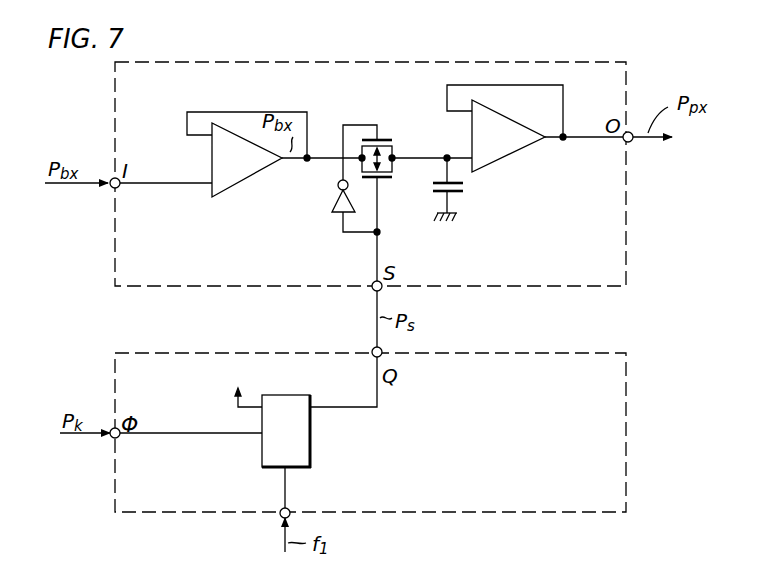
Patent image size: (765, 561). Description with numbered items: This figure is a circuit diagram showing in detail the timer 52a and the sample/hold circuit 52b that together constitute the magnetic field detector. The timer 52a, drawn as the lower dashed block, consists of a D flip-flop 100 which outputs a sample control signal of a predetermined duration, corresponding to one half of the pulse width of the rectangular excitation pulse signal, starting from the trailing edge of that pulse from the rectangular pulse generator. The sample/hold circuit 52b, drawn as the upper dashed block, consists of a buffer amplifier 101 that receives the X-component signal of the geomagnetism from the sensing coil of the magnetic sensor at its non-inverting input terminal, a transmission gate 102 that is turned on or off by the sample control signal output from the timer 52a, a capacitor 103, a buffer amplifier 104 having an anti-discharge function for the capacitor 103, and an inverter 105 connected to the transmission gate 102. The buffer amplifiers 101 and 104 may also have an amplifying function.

The D flip-flop 100 is at (312, 450).
The buffer amplifier 101 is at (250, 177).
The transmission gate 102 is at (389, 138).
The capacitor 103 is at (466, 190).
The buffer amplifier 104 is at (520, 150).
The inverter 105 is at (335, 206).
The timer 52a is at (540, 513).
The sample/hold circuit 52b is at (540, 288).